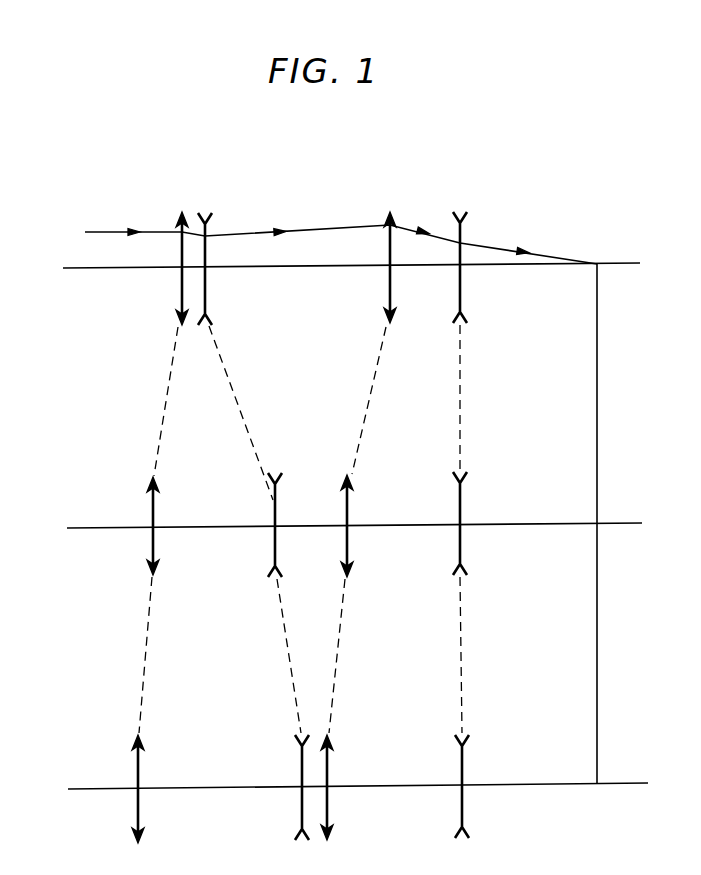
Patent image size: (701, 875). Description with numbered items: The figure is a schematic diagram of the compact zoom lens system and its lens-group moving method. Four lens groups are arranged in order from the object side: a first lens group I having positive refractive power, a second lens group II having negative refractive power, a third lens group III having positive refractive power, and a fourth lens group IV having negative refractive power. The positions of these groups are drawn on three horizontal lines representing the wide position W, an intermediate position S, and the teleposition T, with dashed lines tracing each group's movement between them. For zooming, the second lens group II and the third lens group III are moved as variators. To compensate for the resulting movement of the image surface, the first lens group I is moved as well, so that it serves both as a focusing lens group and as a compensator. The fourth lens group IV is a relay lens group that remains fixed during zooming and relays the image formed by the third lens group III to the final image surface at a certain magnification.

The first lens group I is at (160, 511).
The second lens group II is at (253, 509).
The third lens group III is at (360, 509).
The fourth lens group IV is at (460, 508).
The wide position W is at (334, 269).
The standard (intermediate) position S is at (337, 530).
The teleposition T is at (340, 791).